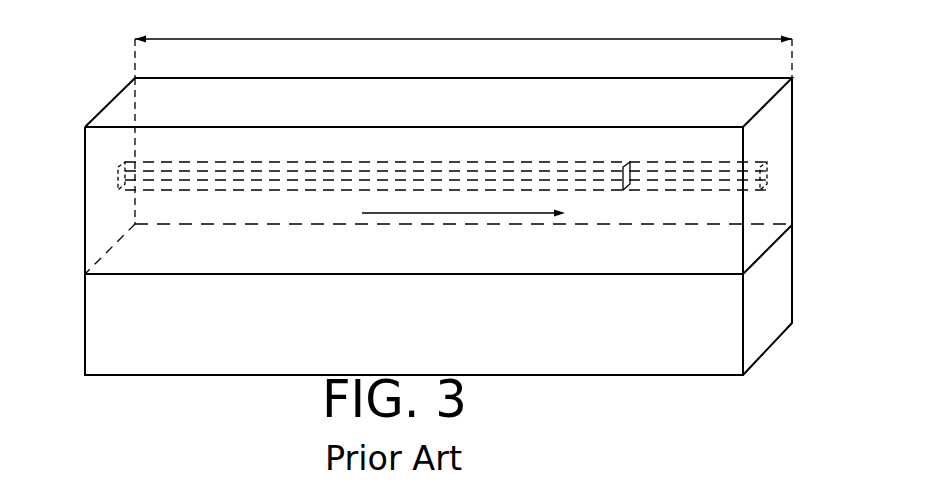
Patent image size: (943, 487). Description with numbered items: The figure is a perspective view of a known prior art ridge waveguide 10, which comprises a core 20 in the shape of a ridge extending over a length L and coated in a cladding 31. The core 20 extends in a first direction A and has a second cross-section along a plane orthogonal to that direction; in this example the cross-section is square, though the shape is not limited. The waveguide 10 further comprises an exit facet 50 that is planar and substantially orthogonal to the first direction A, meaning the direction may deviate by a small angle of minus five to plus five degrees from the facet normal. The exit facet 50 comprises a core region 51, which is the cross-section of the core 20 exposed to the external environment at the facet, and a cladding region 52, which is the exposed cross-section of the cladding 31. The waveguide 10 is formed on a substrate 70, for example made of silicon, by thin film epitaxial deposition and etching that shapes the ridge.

The ridge waveguide 10 is at (442, 187).
The core 20 is at (443, 173).
The cladding 31 is at (100, 230).
The exit facet 50 is at (442, 176).
The core region 51 is at (767, 181).
The cladding region 52 is at (764, 228).
The substrate 70 is at (777, 288).